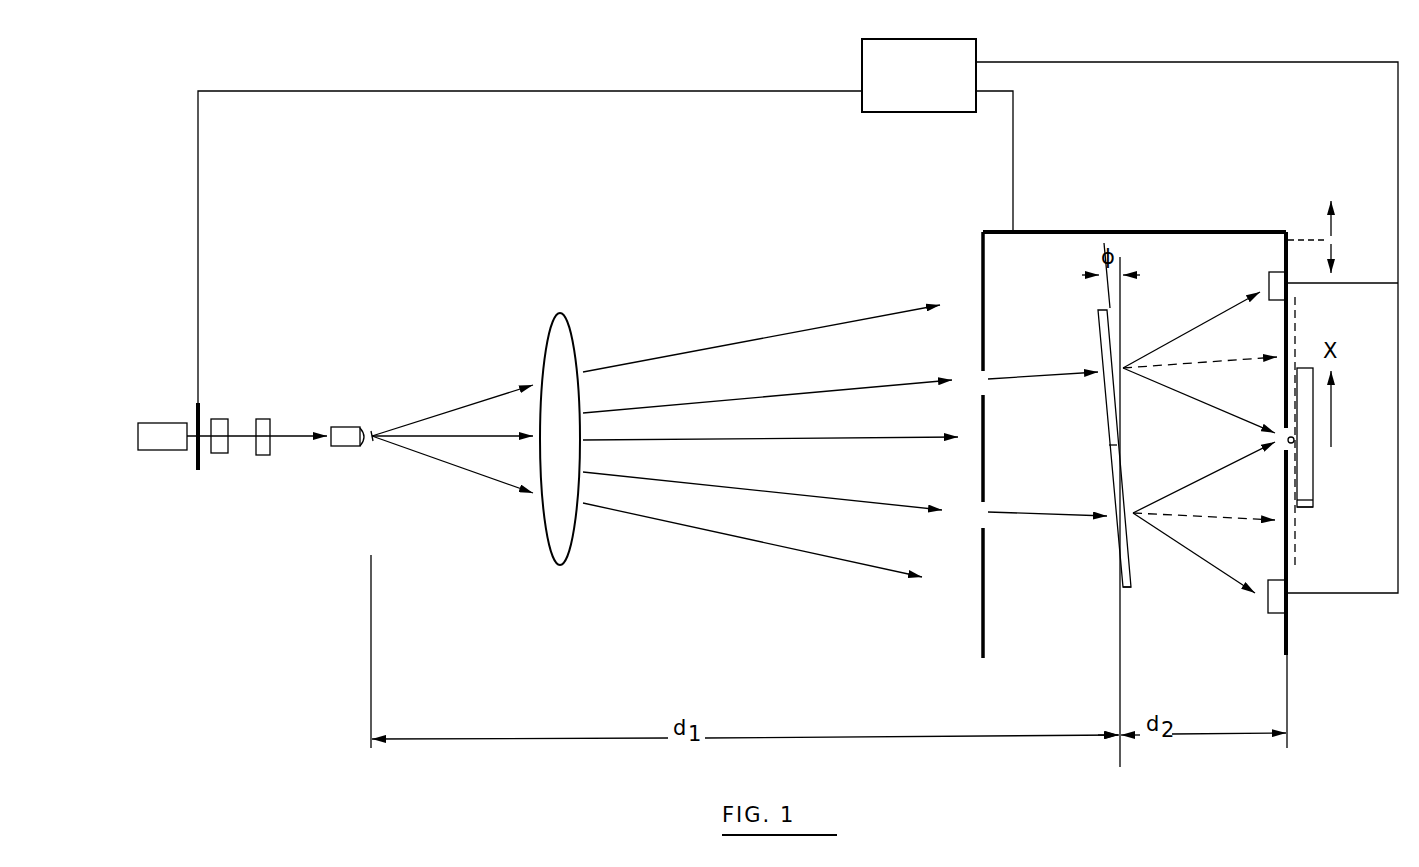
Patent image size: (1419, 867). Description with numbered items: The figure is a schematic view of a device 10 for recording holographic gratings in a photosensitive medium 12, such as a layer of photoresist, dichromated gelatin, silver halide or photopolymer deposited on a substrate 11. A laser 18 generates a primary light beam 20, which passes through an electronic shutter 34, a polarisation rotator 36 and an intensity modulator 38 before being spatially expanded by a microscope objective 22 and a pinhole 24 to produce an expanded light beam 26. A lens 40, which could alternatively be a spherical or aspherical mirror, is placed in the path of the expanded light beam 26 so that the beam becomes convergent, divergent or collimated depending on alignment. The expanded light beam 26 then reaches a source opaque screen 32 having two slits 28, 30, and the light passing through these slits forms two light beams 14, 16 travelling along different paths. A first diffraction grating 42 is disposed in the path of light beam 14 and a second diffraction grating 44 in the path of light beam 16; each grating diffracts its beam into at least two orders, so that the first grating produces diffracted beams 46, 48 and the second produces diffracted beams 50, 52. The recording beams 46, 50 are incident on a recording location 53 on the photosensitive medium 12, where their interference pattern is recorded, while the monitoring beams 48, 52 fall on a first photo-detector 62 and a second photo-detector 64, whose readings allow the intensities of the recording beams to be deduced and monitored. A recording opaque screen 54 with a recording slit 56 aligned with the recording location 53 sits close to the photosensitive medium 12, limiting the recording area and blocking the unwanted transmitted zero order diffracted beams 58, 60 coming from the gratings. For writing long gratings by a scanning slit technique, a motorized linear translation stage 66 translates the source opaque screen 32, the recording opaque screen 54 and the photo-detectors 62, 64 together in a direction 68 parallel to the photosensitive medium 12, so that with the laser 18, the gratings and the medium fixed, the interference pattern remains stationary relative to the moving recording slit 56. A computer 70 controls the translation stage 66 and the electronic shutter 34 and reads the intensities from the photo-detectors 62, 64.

The device 10 is at (690, 285).
The substrate 11 is at (1312, 505).
The photosensitive medium 12 is at (1300, 508).
The light beam 14 is at (1047, 378).
The light beam 16 is at (1057, 516).
The laser 18 is at (158, 452).
The primary light beam 20 is at (292, 433).
The microscope objective 22 is at (347, 447).
The pinhole 24 is at (372, 444).
The expanded light beam 26 is at (432, 410).
The slit 28 is at (980, 380).
The slit 30 is at (980, 515).
The source opaque screen 32 is at (983, 660).
The electronic shutter 34 is at (198, 470).
The polarisation rotator 36 is at (263, 418).
The intensity modulator 38 is at (218, 455).
The lens 40 is at (562, 548).
The first diffraction grating 42 is at (1117, 443).
The second diffraction grating 44 is at (1132, 586).
The diffracted beam 46 is at (1200, 400).
The diffracted beam 48 is at (1197, 325).
The diffracted beam 50 is at (1223, 465).
The diffracted beam 52 is at (1232, 580).
The recording location 53 is at (1312, 442).
The recording opaque screen 54 is at (1290, 657).
The recording slit 56 is at (1288, 443).
The transmitted zero order diffracted beam 58 is at (1247, 358).
The transmitted zero order diffracted beam 60 is at (1228, 518).
The first photo-detector 62 is at (1275, 275).
The second photo-detector 64 is at (1272, 613).
The motorized linear translation stage 66 is at (1160, 232).
The direction 68 is at (1330, 240).
The computer 70 is at (923, 83).